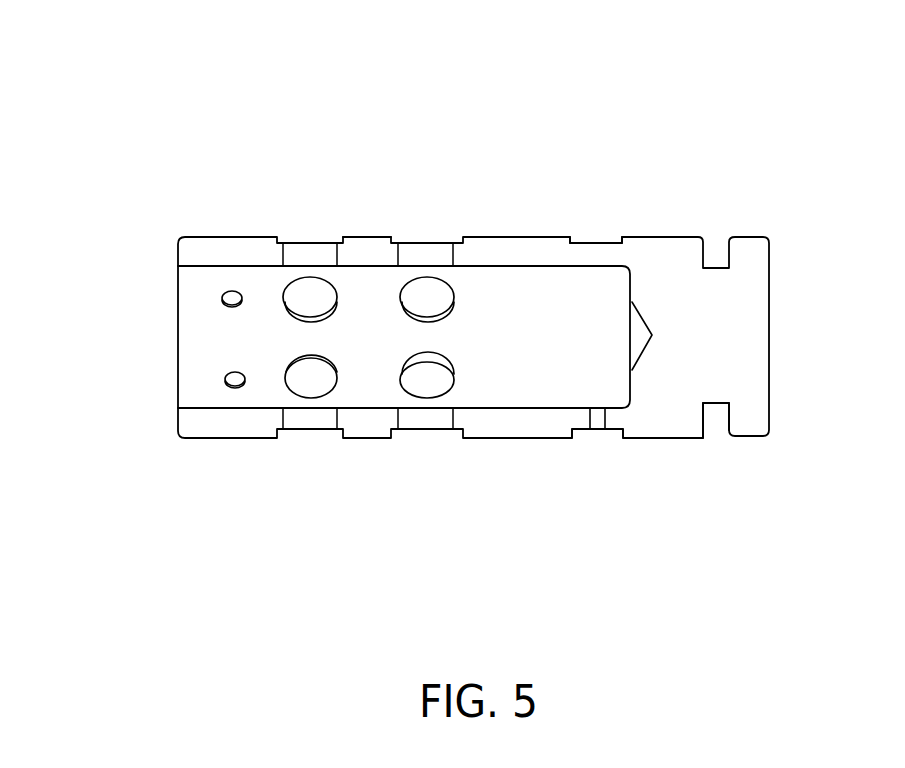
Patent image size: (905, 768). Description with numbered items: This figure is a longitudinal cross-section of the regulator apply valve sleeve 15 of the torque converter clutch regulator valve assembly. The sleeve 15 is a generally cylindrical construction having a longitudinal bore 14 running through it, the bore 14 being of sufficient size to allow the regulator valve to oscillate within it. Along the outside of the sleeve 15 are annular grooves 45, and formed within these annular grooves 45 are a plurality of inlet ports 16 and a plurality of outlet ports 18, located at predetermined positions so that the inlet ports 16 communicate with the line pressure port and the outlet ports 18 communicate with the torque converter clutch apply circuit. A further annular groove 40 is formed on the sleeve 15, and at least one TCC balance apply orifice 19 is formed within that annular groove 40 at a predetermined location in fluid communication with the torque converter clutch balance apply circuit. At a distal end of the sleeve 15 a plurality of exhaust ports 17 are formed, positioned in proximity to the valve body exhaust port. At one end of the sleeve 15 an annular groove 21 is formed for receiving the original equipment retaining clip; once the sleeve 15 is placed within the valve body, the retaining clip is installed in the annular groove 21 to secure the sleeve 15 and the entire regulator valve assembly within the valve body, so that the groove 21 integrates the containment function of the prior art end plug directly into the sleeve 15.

The longitudinal bore 14 is at (197, 410).
The sleeve 15 is at (465, 125).
The inlet ports 16 is at (423, 375).
The exhaust ports 17 is at (232, 293).
The outlet ports 18 is at (307, 293).
The TCC balance apply orifice 19 is at (600, 423).
The annular groove 21 is at (717, 415).
The annular groove 40 is at (593, 243).
The annular grooves 45 is at (397, 237).